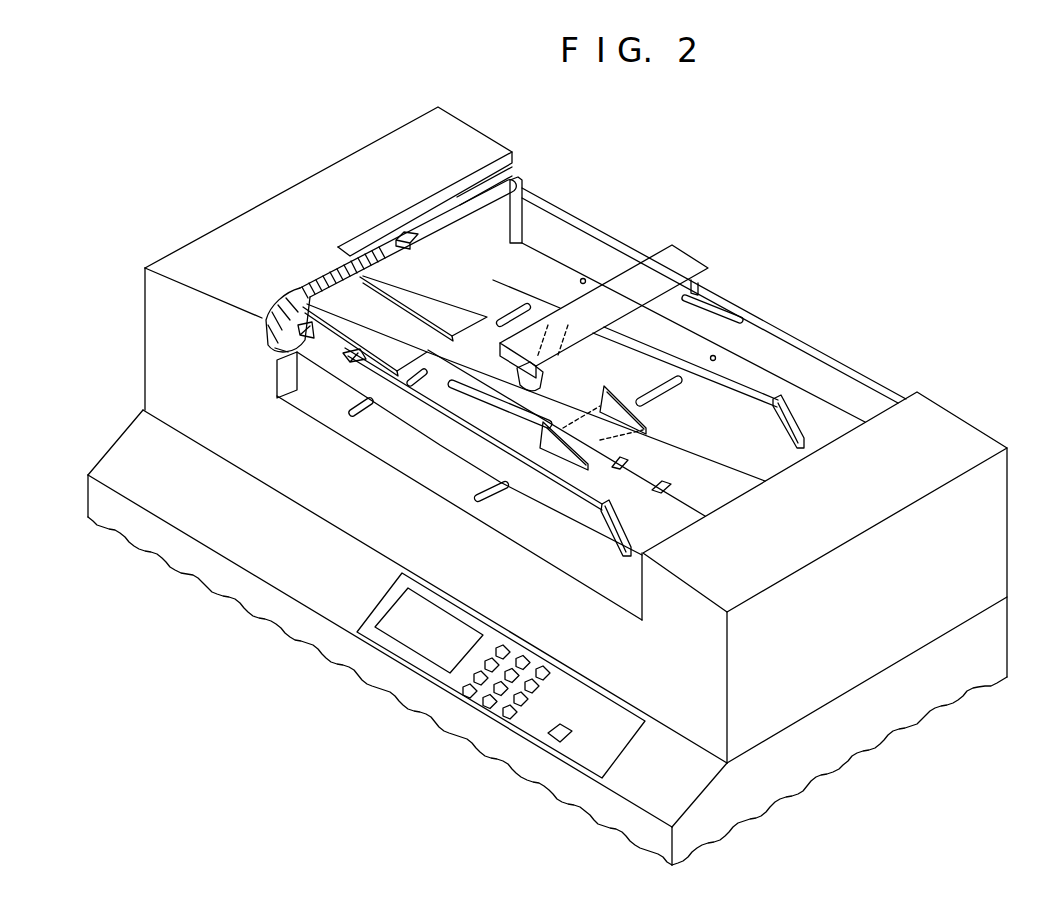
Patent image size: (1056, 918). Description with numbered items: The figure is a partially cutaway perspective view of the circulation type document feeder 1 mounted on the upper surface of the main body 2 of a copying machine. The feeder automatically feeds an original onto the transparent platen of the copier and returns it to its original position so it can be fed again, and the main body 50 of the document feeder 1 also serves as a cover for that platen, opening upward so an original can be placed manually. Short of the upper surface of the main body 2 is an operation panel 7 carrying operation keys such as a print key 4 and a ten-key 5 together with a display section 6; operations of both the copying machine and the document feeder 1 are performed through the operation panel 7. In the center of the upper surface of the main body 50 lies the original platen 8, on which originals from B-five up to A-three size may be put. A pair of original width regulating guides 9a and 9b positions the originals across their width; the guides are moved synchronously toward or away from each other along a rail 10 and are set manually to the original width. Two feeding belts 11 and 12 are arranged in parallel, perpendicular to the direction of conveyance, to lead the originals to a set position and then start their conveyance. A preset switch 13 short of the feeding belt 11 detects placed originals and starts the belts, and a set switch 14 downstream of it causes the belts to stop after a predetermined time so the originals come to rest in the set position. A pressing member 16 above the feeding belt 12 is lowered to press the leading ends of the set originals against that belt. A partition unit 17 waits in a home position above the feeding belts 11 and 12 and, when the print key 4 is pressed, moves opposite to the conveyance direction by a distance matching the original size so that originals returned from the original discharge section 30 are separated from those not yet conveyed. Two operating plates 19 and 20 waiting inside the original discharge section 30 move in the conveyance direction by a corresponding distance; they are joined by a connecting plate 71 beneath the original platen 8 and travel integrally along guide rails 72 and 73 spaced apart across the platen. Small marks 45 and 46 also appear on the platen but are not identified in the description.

The circulation type document feeder 1 is at (635, 170).
The main body of the copying machine 2 is at (118, 456).
The print key 4 is at (563, 725).
The ten-key 5 is at (550, 698).
The display section 6 is at (403, 610).
The operation panel 7 is at (632, 745).
The original platen 8 is at (815, 423).
The original width regulating guide 9a is at (433, 428).
The original width regulating guide 9b is at (747, 408).
The rail 10 is at (527, 308).
The feeding belt 11 is at (368, 328).
The feeding belt 12 is at (417, 289).
The preset switch 13 is at (350, 357).
The set switch 14 is at (302, 328).
The pressing member 16 is at (399, 229).
The partition unit 17 is at (707, 257).
The operating plate 19 is at (567, 432).
The operating plate 20 is at (603, 390).
The original discharge section 30 is at (958, 403).
The marker 45 is at (622, 458).
The marker 46 is at (670, 488).
The main body of the circulation type document feeder 50 is at (167, 310).
The connecting plate 71 is at (583, 412).
The guide rail 72 is at (650, 503).
The guide rail 73 is at (717, 472).